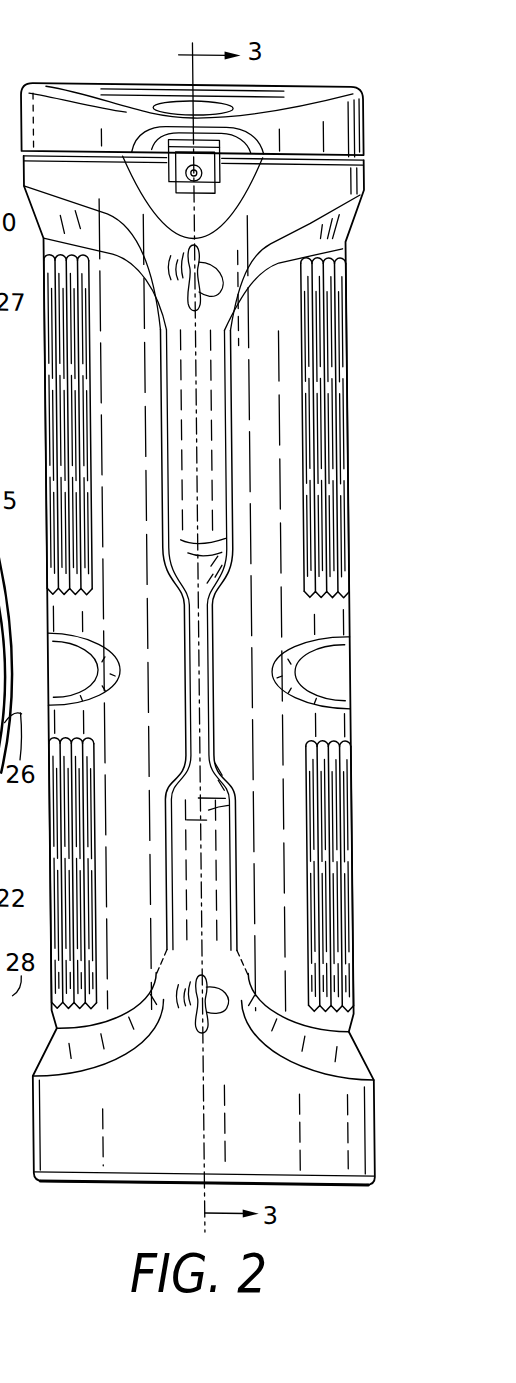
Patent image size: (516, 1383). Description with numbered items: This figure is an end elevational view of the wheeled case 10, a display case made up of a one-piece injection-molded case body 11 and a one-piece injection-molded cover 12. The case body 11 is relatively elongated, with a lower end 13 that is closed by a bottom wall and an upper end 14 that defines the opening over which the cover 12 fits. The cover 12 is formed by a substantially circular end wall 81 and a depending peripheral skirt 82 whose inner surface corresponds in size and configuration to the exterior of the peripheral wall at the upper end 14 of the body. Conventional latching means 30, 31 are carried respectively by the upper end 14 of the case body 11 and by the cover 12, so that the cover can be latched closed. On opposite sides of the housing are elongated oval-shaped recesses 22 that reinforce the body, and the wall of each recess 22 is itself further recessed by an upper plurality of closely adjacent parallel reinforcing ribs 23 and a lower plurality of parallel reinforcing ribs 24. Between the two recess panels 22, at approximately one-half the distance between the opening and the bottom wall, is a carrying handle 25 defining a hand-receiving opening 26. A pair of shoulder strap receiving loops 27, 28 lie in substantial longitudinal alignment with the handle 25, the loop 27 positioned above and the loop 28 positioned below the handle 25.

The wheeled case 10 is at (313, 70).
The case body 11 is at (347, 367).
The cover 12 is at (334, 127).
The lower end 13 is at (342, 1125).
The upper end 14 is at (340, 247).
The recesses 22 is at (347, 977).
The upper reinforcing ribs 23 is at (77, 354).
The lower reinforcing ribs 24 is at (80, 786).
The carrying handle 25 is at (180, 625).
The hand-receiving opening 26 is at (199, 671).
The upper shoulder strap receiving loop 27 is at (203, 252).
The lower shoulder strap receiving loop 28 is at (202, 1024).
The latching means 30 is at (158, 181).
The latching means 31 is at (266, 152).
The end wall 81 is at (127, 86).
The peripheral skirt 82 is at (362, 138).